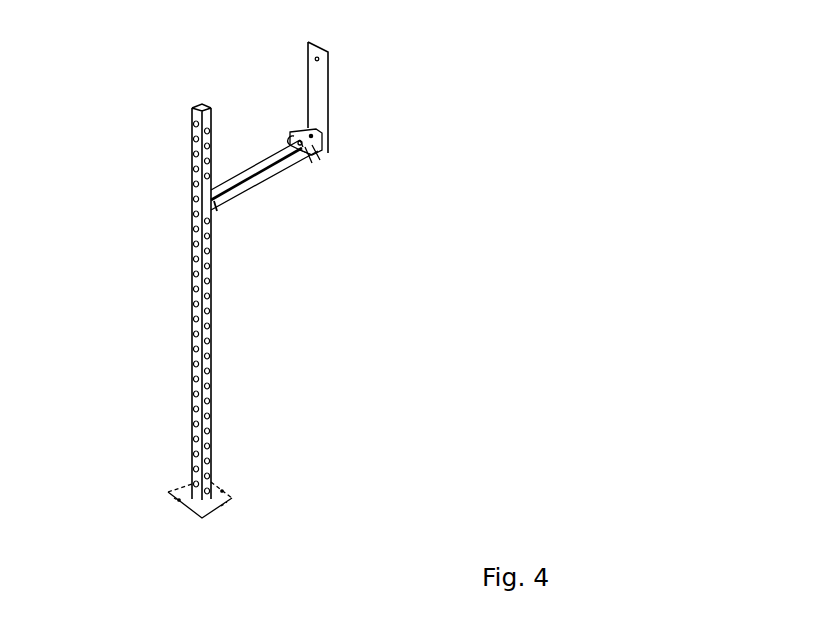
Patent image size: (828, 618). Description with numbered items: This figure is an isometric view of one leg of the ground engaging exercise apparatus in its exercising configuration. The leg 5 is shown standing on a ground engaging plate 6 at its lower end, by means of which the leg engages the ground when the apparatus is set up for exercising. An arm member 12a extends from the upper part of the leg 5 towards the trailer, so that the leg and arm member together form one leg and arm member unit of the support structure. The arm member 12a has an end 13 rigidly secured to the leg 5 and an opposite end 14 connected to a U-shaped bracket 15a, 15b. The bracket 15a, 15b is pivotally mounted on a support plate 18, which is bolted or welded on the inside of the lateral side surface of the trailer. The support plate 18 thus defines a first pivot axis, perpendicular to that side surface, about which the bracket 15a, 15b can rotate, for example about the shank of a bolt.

The leg 5 is at (190, 281).
The ground engaging plate 6 is at (175, 497).
The arm member 12a is at (263, 160).
The end 13 is at (217, 207).
The opposite end 14 is at (307, 158).
The U-shaped bracket 15a is at (310, 152).
The U-shaped bracket 15b is at (306, 152).
The support plate 18 is at (318, 88).